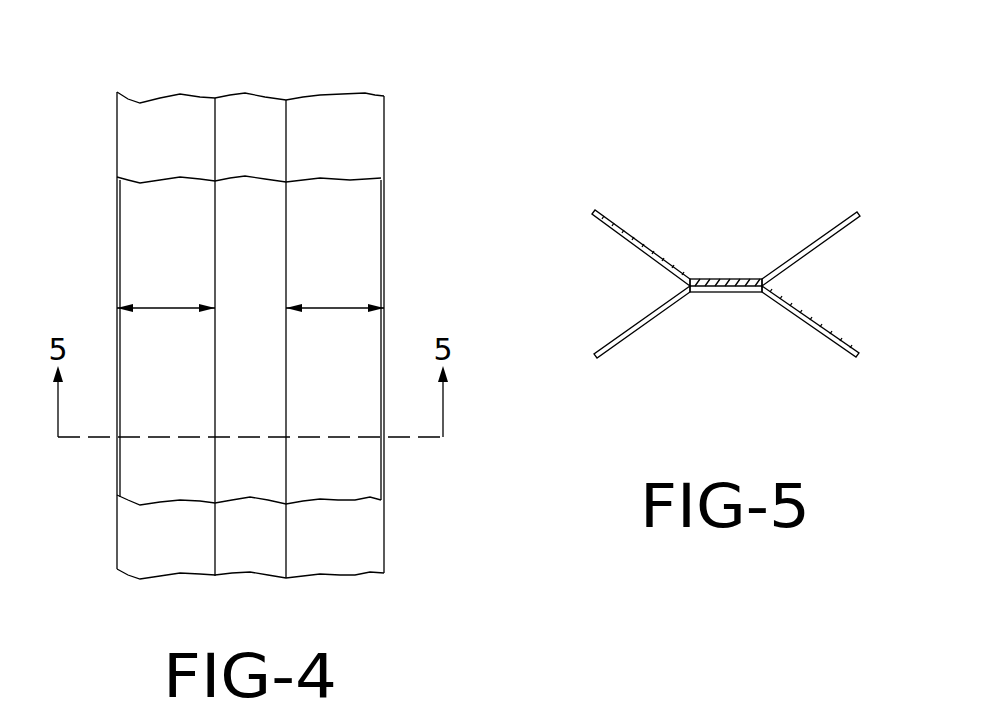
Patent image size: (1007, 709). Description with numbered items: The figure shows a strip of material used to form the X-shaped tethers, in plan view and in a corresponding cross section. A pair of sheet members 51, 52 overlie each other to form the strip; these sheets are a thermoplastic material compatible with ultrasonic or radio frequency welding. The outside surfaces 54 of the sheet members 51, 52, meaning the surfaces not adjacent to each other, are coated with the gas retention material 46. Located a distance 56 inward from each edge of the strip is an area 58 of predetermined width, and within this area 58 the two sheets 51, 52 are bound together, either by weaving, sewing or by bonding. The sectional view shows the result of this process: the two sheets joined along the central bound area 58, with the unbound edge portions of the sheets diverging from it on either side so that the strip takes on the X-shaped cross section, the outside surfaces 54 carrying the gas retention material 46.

In FIG. 4, the gas retention material 46 is at (362, 476).
In FIG. 5, the gas retention material 46 is at (823, 237).
In FIG. 4, the sheet member 51 is at (360, 229).
In FIG. 5, the sheet member 51 is at (662, 240).
In FIG. 4, the sheet member 52 is at (322, 118).
In FIG. 5, the sheet member 52 is at (660, 325).
In FIG. 4, the outside surfaces 54 is at (148, 230).
In FIG. 5, the outside surfaces 54 is at (636, 238).
In FIG. 4, the distance 56 is at (165, 306).
In FIG. 4, the area 58 is at (247, 553).
In FIG. 5, the area 58 is at (727, 278).